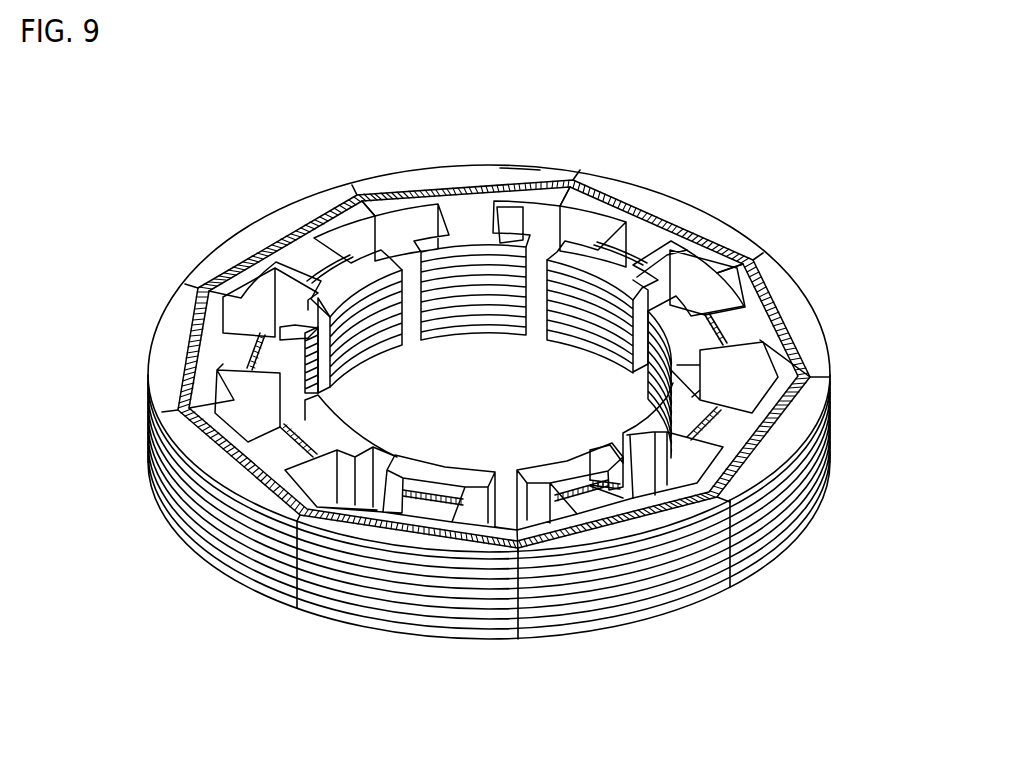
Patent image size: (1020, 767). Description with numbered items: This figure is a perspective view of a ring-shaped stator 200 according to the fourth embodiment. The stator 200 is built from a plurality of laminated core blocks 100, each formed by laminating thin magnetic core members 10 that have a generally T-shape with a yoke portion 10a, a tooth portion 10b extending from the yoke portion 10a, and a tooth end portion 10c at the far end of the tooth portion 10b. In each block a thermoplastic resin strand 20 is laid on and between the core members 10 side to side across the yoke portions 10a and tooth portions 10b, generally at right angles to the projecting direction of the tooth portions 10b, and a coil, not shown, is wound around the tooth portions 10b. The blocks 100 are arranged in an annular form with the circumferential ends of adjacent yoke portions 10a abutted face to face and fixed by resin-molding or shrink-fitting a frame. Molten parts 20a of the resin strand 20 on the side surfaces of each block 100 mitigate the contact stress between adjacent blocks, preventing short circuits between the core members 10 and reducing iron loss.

The stator 200 is at (617, 168).
The laminated core block 100 is at (700, 200).
The thermoplastic resin strand 20 is at (412, 190).
The molten part 20a is at (817, 357).
The core member 10 is at (458, 178).
The yoke portion 10a is at (515, 180).
The tooth portion 10b is at (224, 350).
The tooth end portion 10c is at (337, 293).